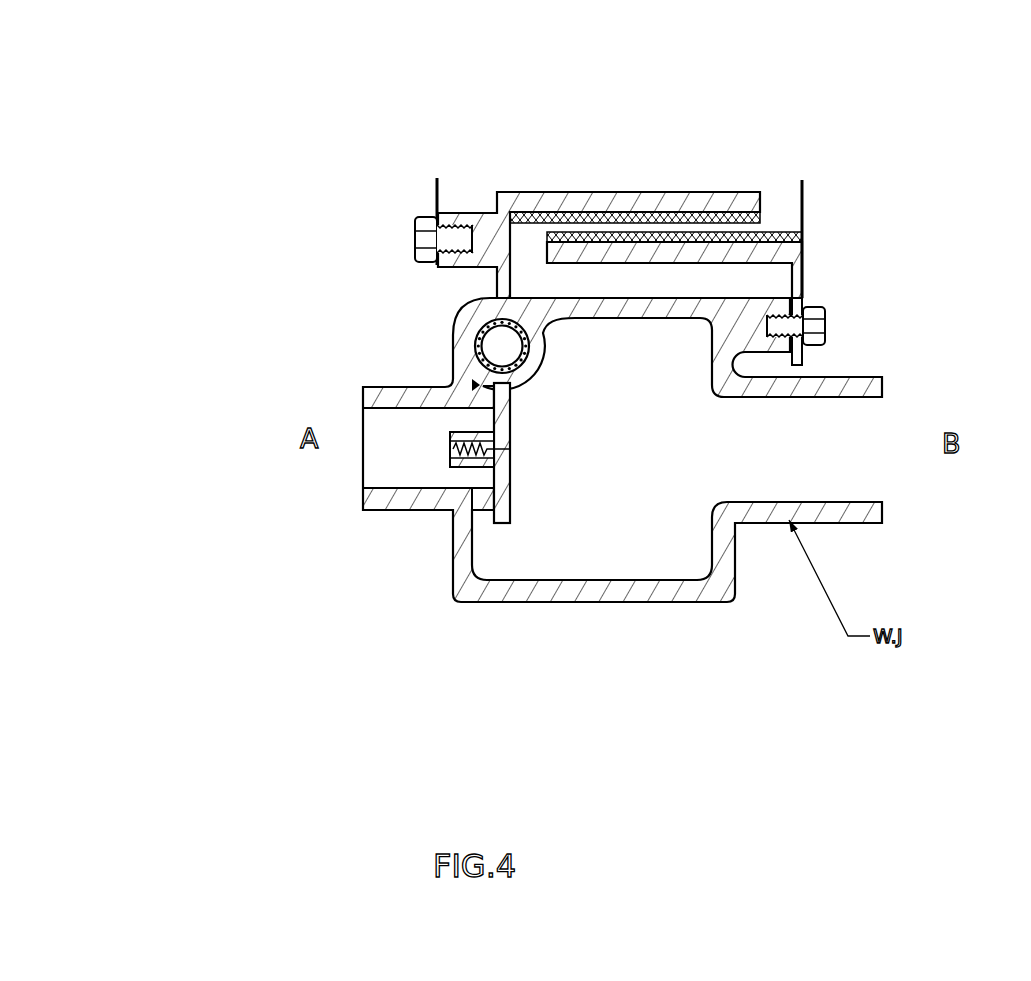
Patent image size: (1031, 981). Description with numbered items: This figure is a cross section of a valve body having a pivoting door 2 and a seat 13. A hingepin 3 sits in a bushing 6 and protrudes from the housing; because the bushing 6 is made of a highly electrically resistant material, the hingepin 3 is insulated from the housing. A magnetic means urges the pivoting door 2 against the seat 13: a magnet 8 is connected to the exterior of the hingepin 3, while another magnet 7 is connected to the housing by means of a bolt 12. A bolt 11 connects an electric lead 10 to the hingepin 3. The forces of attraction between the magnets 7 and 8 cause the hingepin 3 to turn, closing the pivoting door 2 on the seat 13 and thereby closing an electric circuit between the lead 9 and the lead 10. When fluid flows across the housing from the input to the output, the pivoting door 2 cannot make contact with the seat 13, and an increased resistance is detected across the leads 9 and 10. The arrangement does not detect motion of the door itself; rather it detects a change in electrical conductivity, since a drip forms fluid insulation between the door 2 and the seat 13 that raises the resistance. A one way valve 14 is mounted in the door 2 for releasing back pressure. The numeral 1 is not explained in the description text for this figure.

The valve body 1 is at (390, 508).
The pivoting door 2 is at (509, 522).
The hingepin 3 is at (492, 352).
The bushing 6 is at (478, 326).
The magnet 7 is at (779, 254).
The magnet 8 is at (578, 190).
The electric lead 9 is at (808, 187).
The electric lead 10 is at (435, 186).
The bolt 11 is at (413, 240).
The bolt 12 is at (830, 321).
The seat 13 is at (489, 504).
The one way valve 14 is at (447, 445).